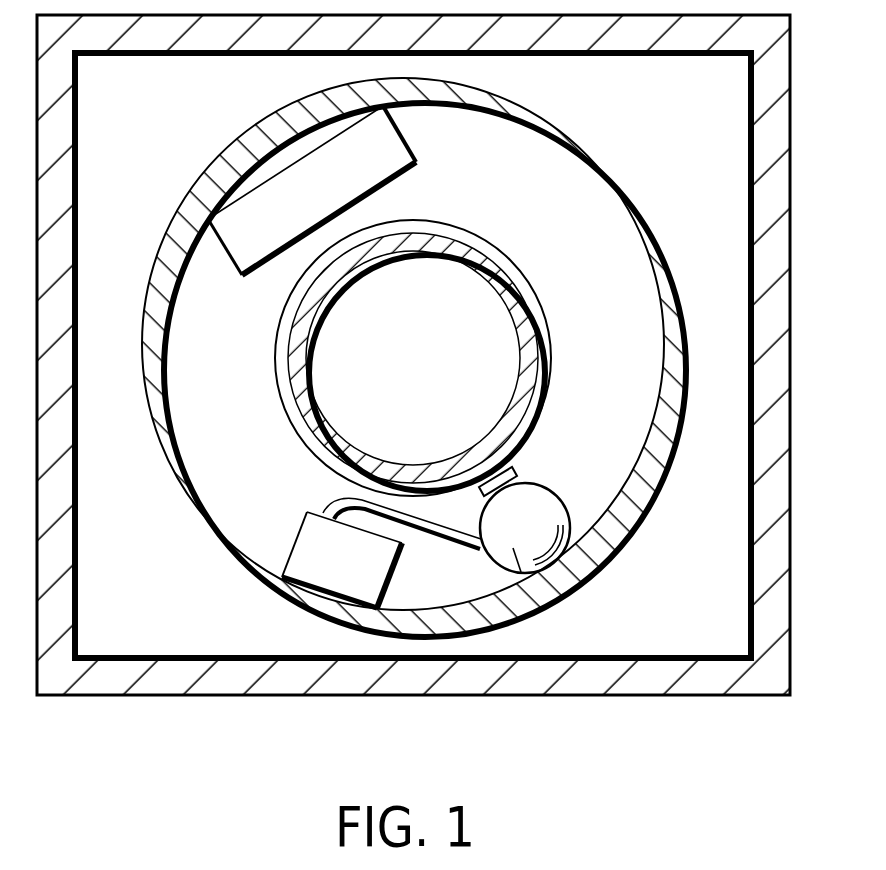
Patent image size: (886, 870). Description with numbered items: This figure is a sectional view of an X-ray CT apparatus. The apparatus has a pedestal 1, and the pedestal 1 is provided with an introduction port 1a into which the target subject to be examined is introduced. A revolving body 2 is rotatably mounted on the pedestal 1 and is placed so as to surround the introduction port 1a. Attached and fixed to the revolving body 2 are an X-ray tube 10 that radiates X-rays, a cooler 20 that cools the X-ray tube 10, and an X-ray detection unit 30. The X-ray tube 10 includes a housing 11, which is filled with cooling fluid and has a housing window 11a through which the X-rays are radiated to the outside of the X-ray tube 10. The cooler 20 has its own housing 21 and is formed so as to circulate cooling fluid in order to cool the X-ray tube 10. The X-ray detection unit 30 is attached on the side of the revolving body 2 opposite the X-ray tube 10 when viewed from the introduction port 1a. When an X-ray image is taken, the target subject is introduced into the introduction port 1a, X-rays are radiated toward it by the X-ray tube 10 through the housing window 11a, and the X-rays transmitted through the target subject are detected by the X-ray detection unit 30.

The pedestal 1 is at (780, 358).
The introduction port 1a is at (522, 345).
The revolving body 2 is at (607, 162).
The X-ray tube 10 is at (543, 600).
The housing 11 is at (568, 513).
The housing window 11a is at (513, 474).
The cooler 20 is at (311, 570).
The housing 21 is at (322, 514).
The X-ray detection unit 30 is at (233, 157).